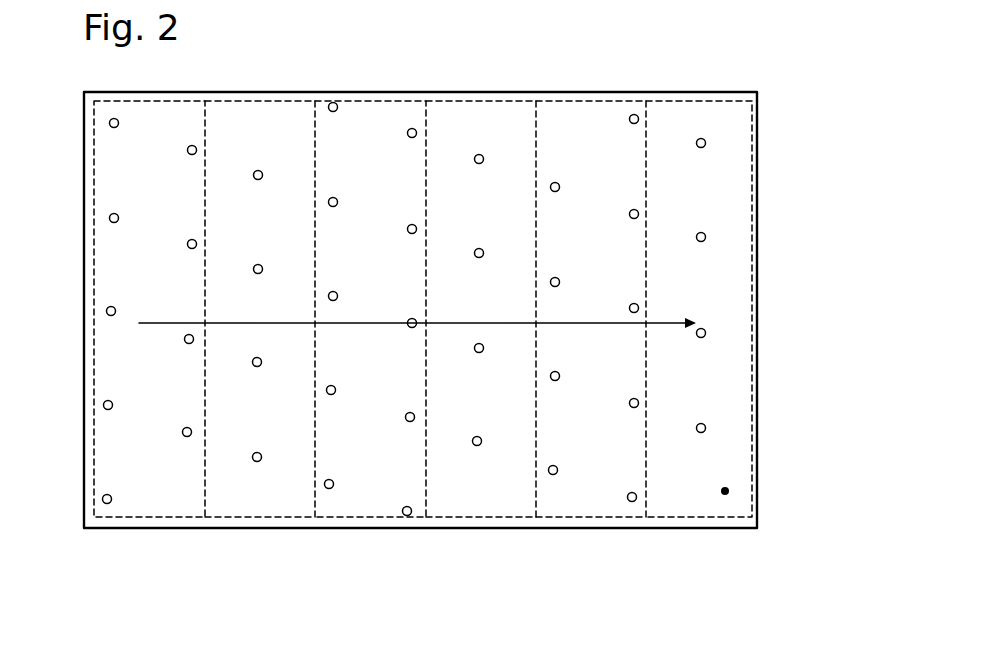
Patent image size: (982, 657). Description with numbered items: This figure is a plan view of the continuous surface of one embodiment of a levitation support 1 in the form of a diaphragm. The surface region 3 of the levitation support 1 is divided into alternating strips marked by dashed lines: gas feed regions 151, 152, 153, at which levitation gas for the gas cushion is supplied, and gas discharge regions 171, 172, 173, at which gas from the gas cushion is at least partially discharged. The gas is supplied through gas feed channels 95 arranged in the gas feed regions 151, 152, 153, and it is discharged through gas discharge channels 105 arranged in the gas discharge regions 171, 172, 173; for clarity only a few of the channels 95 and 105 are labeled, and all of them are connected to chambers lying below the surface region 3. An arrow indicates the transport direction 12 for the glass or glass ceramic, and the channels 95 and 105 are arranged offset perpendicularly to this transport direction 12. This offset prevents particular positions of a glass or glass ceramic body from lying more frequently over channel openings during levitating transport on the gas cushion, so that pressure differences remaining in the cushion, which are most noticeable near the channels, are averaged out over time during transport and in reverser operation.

The levitation support 1 is at (757, 73).
The surface region 3 is at (725, 491).
The transport direction 12 is at (663, 322).
The gas feed channels 95 is at (111, 126).
The gas discharge channels 105 is at (261, 265).
The gas feed region 151 is at (133, 518).
The gas feed region 152 is at (357, 518).
The gas feed region 153 is at (573, 518).
The gas discharge region 171 is at (253, 518).
The gas discharge region 172 is at (475, 518).
The gas discharge region 173 is at (692, 518).